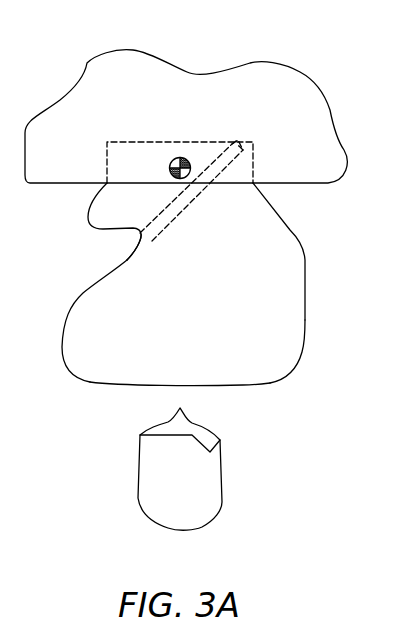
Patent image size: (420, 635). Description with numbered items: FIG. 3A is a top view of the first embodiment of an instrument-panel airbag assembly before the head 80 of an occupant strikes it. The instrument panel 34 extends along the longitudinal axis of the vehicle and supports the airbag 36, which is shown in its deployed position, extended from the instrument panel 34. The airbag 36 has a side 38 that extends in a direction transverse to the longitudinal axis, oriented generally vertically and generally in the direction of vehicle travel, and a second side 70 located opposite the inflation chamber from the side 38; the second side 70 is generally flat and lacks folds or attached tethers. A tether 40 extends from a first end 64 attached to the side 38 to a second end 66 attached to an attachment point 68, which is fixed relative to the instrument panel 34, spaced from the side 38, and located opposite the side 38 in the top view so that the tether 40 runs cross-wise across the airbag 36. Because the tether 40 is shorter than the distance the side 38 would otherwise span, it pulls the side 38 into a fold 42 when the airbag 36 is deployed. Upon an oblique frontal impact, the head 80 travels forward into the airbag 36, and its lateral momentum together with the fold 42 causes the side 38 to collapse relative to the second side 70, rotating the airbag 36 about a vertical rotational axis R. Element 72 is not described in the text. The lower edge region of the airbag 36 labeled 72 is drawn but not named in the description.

The rotational axis R is at (180, 157).
The instrument panel 34 is at (310, 187).
The airbag 36 is at (293, 374).
The side 38 is at (73, 298).
The tether 40 is at (176, 205).
The fold 42 is at (140, 240).
The first end 64 is at (144, 240).
The second end 66 is at (237, 146).
The attachment point 68 is at (233, 142).
The second side 70 is at (305, 287).
The bottom surface 72 is at (247, 385).
The head 80 is at (222, 502).